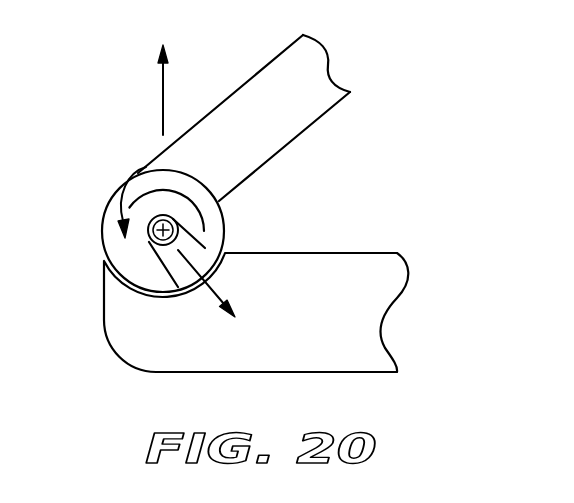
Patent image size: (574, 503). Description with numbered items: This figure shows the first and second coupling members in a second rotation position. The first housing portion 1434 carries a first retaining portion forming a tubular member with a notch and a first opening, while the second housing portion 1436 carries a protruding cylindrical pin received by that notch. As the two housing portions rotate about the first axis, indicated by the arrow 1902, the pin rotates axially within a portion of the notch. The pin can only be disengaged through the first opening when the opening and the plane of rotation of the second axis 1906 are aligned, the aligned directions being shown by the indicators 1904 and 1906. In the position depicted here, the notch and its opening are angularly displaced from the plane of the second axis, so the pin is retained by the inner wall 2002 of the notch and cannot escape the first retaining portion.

The first housing portion 1434 is at (315, 110).
The inner wall of the notch 2002 is at (202, 250).
The second housing portion 1436 is at (380, 348).
The plane of rotation of the second axis 1906 is at (162, 87).
The arrow indicating rotation about the first axis 1902 is at (132, 198).
The alignment direction of the first opening 1904 is at (218, 295).